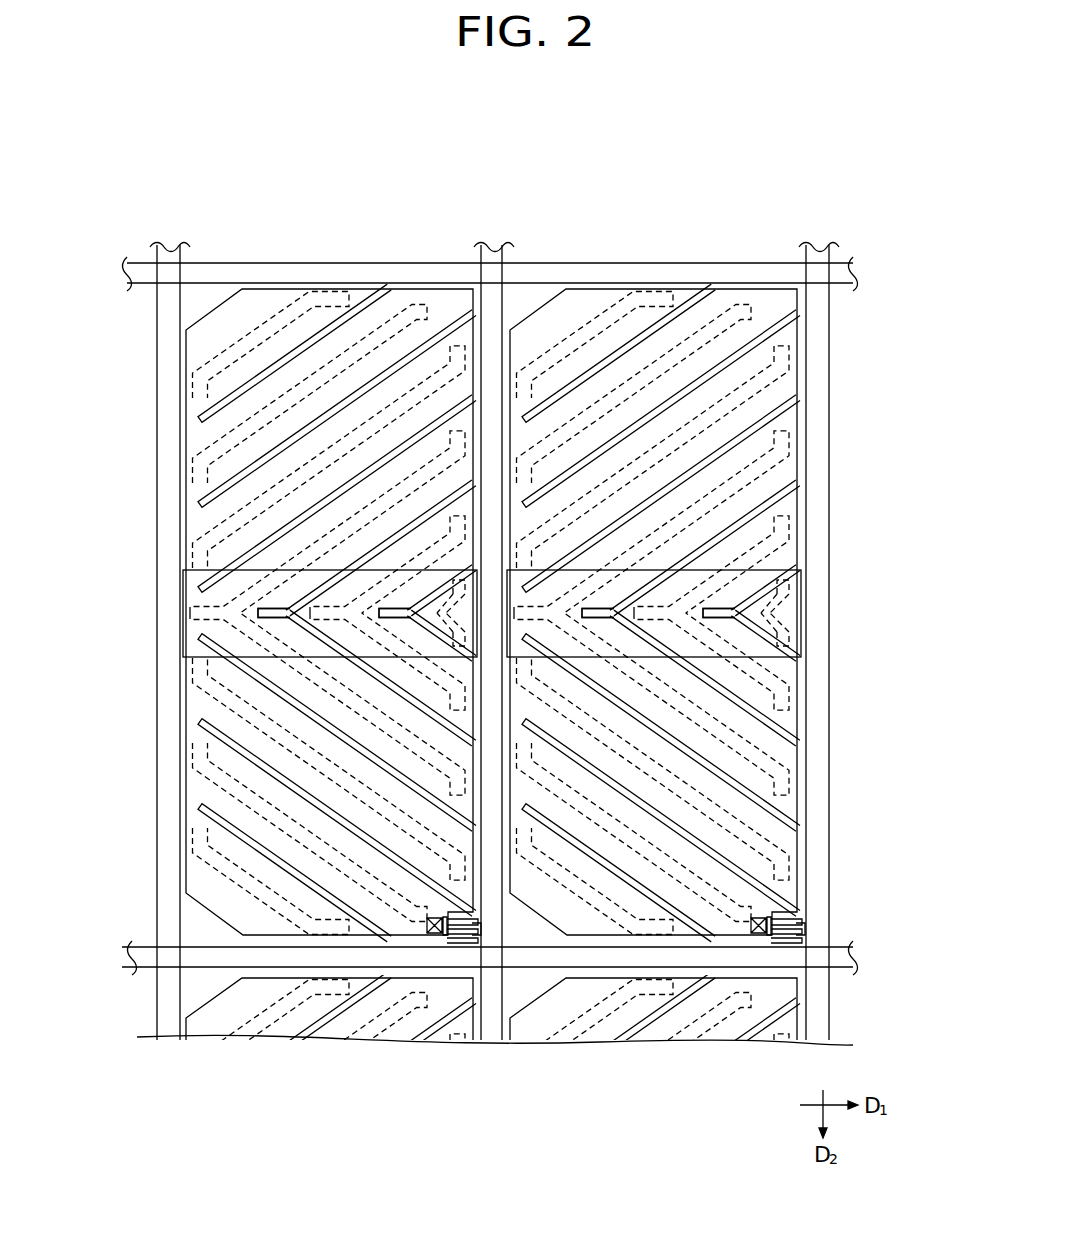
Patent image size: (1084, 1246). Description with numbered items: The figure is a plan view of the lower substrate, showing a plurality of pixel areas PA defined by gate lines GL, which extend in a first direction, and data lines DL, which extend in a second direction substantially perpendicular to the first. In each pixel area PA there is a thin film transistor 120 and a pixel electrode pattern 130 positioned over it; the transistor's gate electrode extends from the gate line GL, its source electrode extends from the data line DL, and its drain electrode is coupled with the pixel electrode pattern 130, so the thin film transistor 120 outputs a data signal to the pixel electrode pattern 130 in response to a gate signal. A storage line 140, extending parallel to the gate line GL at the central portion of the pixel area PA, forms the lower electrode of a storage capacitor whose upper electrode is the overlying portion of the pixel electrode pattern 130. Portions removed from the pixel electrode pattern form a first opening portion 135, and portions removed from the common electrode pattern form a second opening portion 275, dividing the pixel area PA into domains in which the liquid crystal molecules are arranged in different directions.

The gate line GL is at (125, 268).
The data line DL is at (170, 523).
The pixel area PA is at (735, 683).
The pixel electrode pattern 130 is at (802, 728).
The first opening portion 135 is at (200, 724).
The second opening portion 275 is at (222, 432).
The storage line 140 is at (253, 570).
The thin film transistor 120 is at (790, 914).